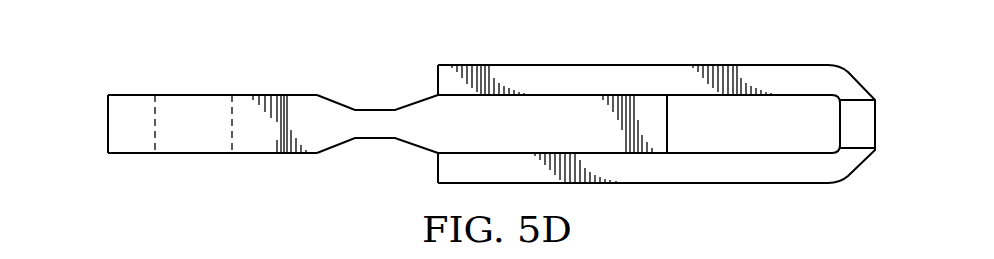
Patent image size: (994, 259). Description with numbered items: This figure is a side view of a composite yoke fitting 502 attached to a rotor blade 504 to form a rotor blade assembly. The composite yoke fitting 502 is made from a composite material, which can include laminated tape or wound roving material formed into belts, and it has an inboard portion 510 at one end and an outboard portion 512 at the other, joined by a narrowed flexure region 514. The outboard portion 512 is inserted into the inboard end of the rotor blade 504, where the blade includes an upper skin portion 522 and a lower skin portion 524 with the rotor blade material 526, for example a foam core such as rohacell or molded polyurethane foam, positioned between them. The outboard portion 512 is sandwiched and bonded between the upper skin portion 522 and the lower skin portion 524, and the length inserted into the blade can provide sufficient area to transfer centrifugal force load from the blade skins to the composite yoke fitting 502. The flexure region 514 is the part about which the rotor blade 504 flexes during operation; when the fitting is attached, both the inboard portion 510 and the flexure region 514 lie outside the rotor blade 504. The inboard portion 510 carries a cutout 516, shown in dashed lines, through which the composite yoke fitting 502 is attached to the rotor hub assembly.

The composite yoke fitting 502 is at (125, 77).
The rotor blade 504 is at (752, 65).
The inboard portion 510 is at (106, 125).
The outboard portion 512 is at (668, 122).
The flexure region 514 is at (372, 140).
The cutout 516 is at (195, 103).
The upper skin portion 522 is at (553, 72).
The lower skin portion 524 is at (737, 183).
The rotor blade material 526 is at (832, 120).